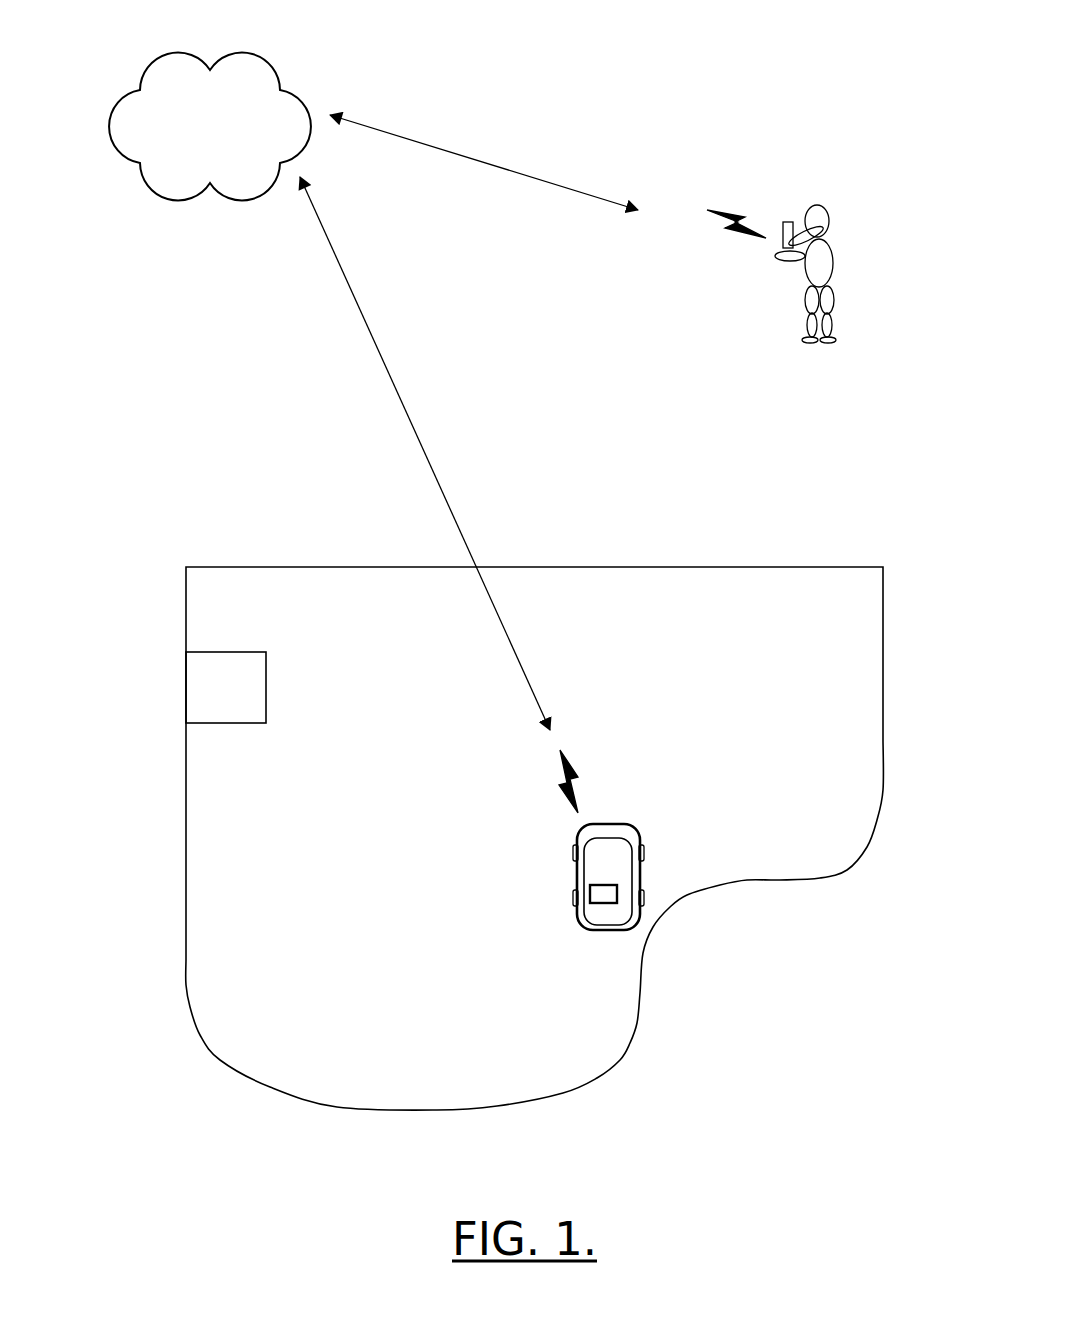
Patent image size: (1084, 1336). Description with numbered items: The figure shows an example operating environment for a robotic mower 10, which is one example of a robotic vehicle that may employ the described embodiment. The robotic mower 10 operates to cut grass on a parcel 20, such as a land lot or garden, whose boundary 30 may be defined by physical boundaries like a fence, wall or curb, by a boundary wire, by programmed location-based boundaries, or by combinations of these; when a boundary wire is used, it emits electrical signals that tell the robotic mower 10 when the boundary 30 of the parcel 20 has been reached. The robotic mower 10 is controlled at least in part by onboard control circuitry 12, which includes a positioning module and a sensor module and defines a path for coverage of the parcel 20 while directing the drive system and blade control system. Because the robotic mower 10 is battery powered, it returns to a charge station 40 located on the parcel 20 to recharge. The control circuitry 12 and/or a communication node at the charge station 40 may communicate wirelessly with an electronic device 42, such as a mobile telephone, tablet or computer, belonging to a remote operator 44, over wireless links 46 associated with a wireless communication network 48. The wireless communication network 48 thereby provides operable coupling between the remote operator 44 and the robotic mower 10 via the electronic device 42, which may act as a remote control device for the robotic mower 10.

The robotic mower 10 is at (640, 862).
The control circuitry 12 is at (610, 885).
The parcel 20 is at (405, 917).
The boundary 30 is at (640, 1016).
The charge station 40 is at (212, 684).
The electronic device 42 is at (790, 210).
The remote operator 44 is at (858, 207).
The wireless links 46 is at (372, 310).
The wireless communication network 48 is at (273, 65).